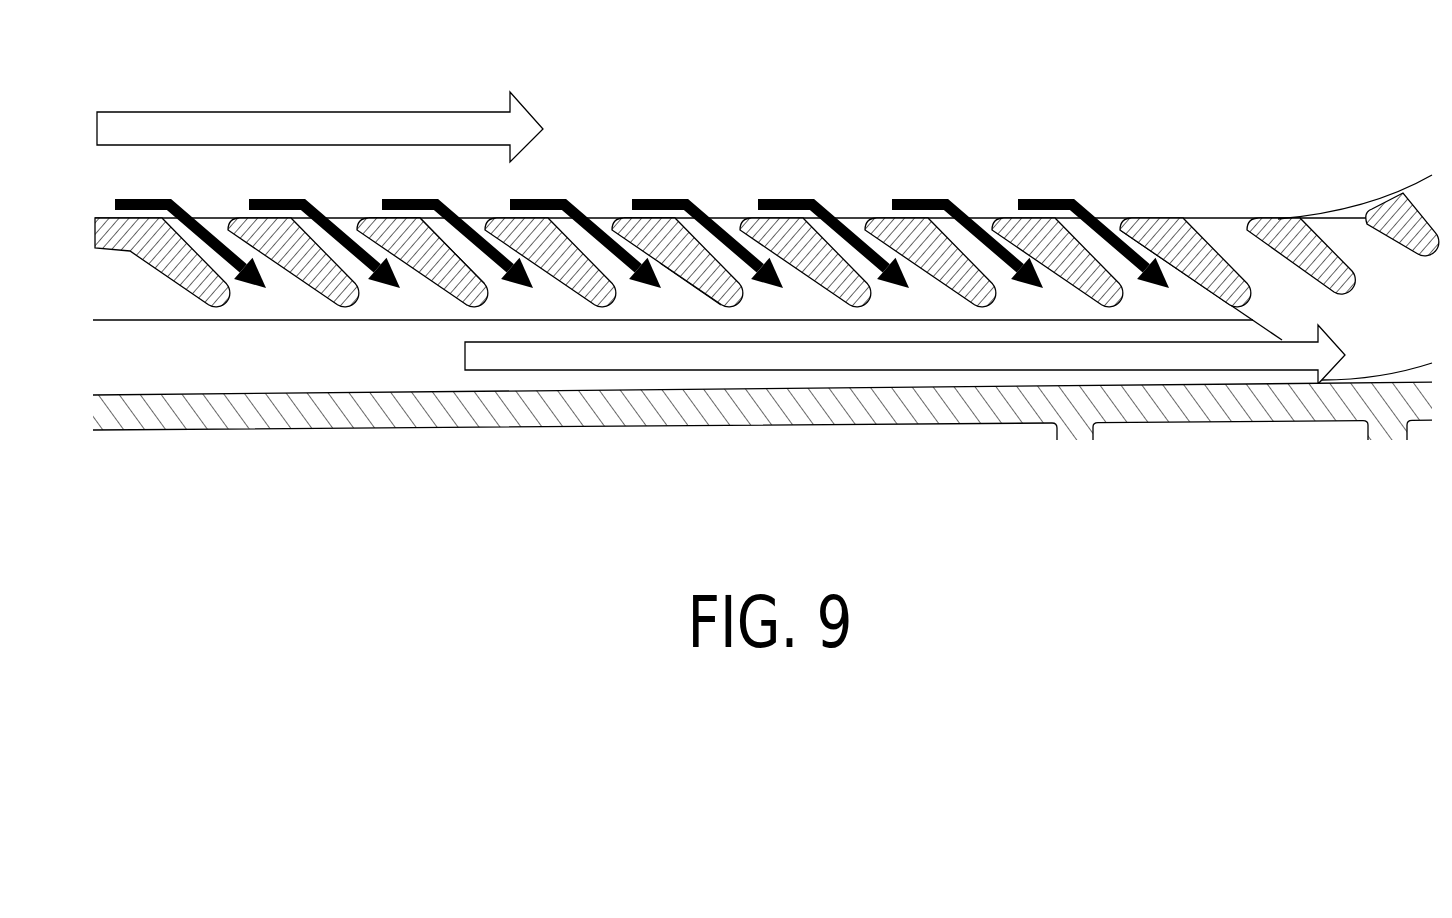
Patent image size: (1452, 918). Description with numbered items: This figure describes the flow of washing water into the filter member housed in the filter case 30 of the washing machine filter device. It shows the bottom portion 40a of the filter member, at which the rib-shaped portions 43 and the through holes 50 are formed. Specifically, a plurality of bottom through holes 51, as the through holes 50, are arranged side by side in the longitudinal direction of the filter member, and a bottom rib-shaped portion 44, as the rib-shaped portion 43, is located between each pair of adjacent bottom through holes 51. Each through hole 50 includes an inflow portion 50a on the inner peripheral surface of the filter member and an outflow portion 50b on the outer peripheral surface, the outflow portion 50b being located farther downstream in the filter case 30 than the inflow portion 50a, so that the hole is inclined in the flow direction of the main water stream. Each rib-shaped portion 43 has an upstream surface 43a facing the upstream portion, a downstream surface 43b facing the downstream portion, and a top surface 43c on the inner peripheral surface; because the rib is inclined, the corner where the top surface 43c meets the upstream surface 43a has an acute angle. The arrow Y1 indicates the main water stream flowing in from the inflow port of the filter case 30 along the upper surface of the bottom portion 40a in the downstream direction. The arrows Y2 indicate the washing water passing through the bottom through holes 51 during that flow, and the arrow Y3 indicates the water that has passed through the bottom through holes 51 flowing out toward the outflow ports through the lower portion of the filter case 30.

The filter case 30 is at (612, 412).
The bottom portion 40a is at (1125, 218).
The rib-shaped portion 43 is at (767, 353).
The bottom rib-shaped portion 44 is at (838, 283).
The upstream surface 43a is at (462, 262).
The downstream surface 43b is at (457, 262).
The top surface 43c is at (372, 218).
The through hole 50 is at (805, 365).
The bottom through hole 51 is at (770, 292).
The inflow portion 50a is at (672, 300).
The outflow portion 50b is at (603, 220).
The arrow indicating flow of main water stream Y1 is at (290, 112).
The arrows indicating flows through bottom through holes Y2 is at (413, 198).
The arrow indicating flow toward outflow ports Y3 is at (975, 372).